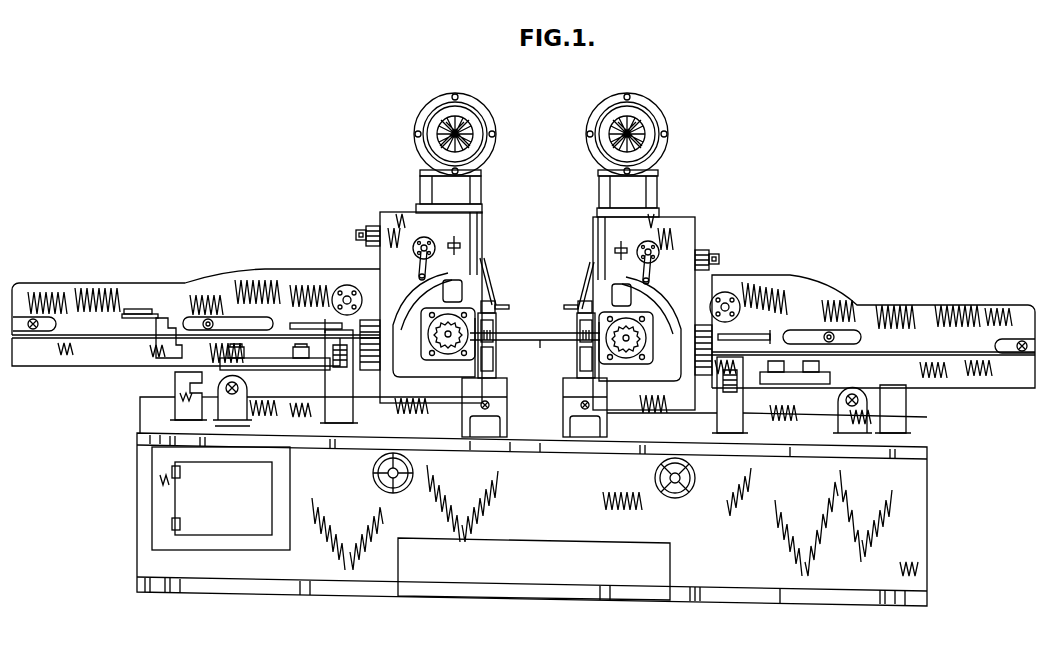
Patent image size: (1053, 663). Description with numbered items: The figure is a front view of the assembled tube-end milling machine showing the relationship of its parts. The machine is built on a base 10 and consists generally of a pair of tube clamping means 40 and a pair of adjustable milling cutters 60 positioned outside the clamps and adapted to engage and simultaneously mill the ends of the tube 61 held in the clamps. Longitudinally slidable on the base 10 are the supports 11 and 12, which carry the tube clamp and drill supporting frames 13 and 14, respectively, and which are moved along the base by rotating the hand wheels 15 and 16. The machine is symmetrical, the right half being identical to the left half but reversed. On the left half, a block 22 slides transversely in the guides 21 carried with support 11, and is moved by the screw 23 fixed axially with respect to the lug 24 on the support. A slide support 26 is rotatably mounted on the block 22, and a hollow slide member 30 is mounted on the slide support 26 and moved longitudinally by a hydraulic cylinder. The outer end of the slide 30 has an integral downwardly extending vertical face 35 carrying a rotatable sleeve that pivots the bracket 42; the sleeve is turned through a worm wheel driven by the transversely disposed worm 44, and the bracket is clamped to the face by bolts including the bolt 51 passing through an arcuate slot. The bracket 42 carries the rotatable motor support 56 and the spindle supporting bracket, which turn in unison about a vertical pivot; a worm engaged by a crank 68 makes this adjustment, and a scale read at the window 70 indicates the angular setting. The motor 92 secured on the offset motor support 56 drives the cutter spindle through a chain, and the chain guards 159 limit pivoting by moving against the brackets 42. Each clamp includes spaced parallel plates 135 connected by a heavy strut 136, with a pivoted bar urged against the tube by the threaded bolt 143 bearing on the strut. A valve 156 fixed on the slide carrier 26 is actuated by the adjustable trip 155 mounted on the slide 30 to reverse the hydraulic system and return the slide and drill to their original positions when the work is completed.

The base 10 is at (915, 517).
The support 11 is at (152, 409).
The support 12 is at (912, 428).
The tube clamp and drill supporting frame 13 is at (507, 409).
The tube clamp and drill supporting frame 14 is at (565, 408).
The hand wheel 15 is at (373, 473).
The hand wheel 16 is at (695, 476).
The guides 21 is at (175, 386).
The block 22 is at (353, 388).
The screw 23 is at (238, 395).
The lug 24 is at (235, 430).
The slide support 26 is at (68, 358).
The hollow slide member 30 is at (232, 283).
The vertical face 35 is at (370, 240).
The tube clamping means 40 is at (500, 330).
The bracket 42 is at (482, 240).
The worm 44 is at (343, 287).
The bolt 51 is at (358, 231).
The motor support 56 is at (480, 194).
The milling cutter 60 is at (446, 352).
The tube 61 is at (540, 348).
The crank 68 is at (419, 260).
The window 70 is at (432, 283).
The motor 92 is at (493, 128).
The plates 135 is at (496, 360).
The strut 136 is at (497, 349).
The threaded bolt 143 is at (496, 303).
The adjustable trip 155 is at (144, 309).
The valve 156 is at (162, 344).
The guards 159 is at (489, 282).